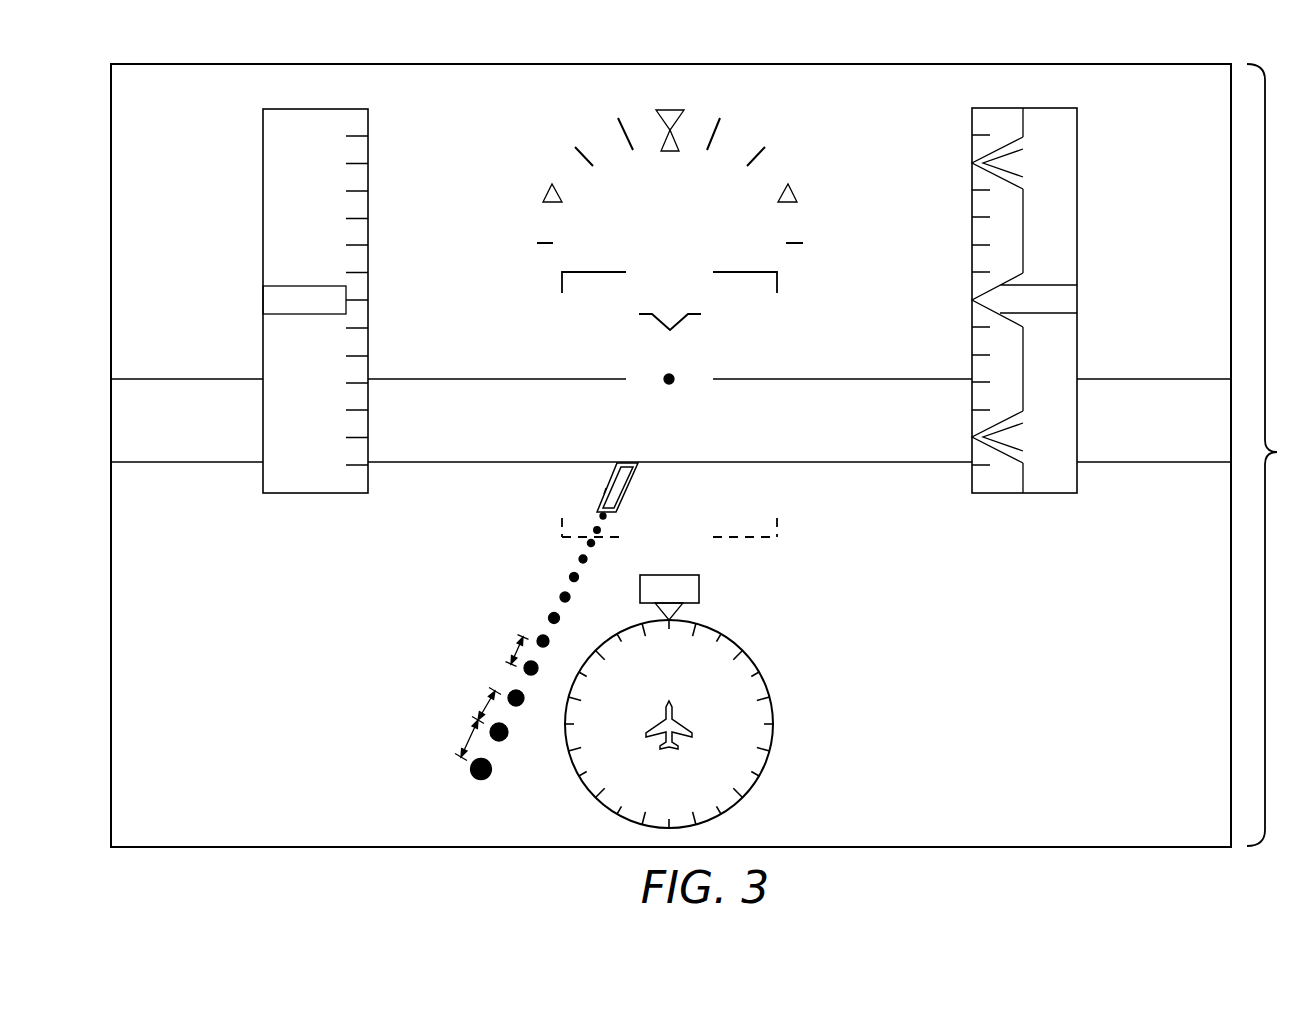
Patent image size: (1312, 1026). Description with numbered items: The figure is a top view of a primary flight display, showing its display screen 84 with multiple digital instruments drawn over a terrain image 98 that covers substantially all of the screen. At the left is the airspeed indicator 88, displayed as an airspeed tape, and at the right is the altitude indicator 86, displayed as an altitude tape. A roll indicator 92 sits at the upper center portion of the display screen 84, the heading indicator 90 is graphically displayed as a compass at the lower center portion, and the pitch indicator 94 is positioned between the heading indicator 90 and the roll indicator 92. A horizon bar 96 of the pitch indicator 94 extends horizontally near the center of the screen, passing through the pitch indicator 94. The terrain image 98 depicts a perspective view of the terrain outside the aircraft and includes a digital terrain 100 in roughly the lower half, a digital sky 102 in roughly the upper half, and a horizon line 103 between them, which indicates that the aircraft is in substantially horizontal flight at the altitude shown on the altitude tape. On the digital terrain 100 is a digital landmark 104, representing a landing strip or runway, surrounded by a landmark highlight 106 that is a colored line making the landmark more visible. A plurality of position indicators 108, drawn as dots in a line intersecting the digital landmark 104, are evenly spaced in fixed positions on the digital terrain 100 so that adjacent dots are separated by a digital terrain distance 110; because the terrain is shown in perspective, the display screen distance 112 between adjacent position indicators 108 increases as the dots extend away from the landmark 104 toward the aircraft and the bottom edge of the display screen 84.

The display screen 84 is at (127, 64).
The altitude indicator 86 is at (987, 108).
The airspeed indicator 88 is at (280, 109).
The heading indicator 90 is at (774, 712).
The roll indicator 92 is at (746, 128).
The pitch indicator 94 is at (566, 303).
The horizon bar 96 is at (1167, 378).
The terrain image 98 is at (1277, 455).
The digital terrain 100 is at (1196, 507).
The digital sky 102 is at (1196, 111).
The horizon line 103 is at (155, 462).
The digital landmark 104 is at (628, 490).
The landmark highlight 106 is at (604, 490).
The position indicators 108 is at (507, 738).
The digital terrain distance 110 is at (520, 650).
The display screen distance 112 is at (485, 700).